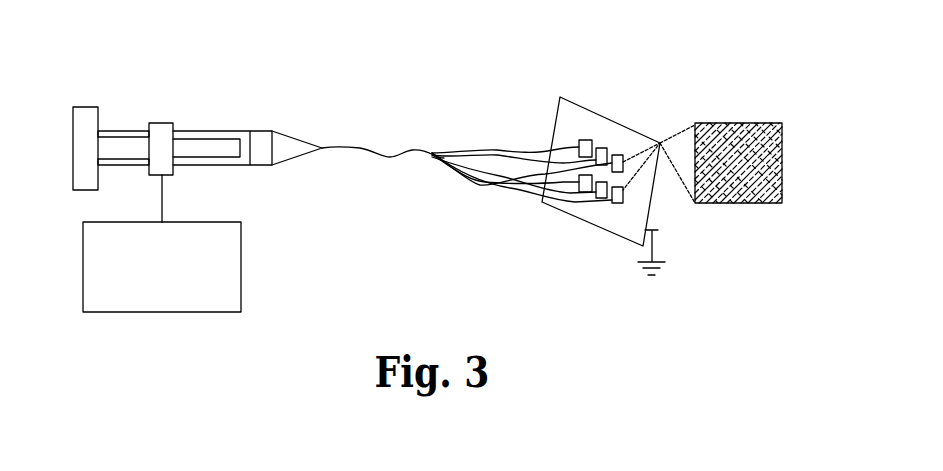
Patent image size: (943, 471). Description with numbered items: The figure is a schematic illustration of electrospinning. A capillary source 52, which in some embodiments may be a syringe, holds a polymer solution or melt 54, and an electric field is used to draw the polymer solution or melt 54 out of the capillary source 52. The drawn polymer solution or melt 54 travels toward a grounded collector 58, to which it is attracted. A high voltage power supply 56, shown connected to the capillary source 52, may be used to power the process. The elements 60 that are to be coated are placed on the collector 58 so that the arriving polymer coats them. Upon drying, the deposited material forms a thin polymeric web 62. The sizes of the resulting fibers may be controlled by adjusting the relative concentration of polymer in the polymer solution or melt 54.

The capillary source 52 is at (200, 133).
The polymer solution or melt 54 is at (417, 150).
The high voltage power supply 56 is at (232, 256).
The grounded collector 58 is at (605, 117).
The elements to be coated 60 is at (608, 204).
The thin polymeric web 62 is at (738, 127).